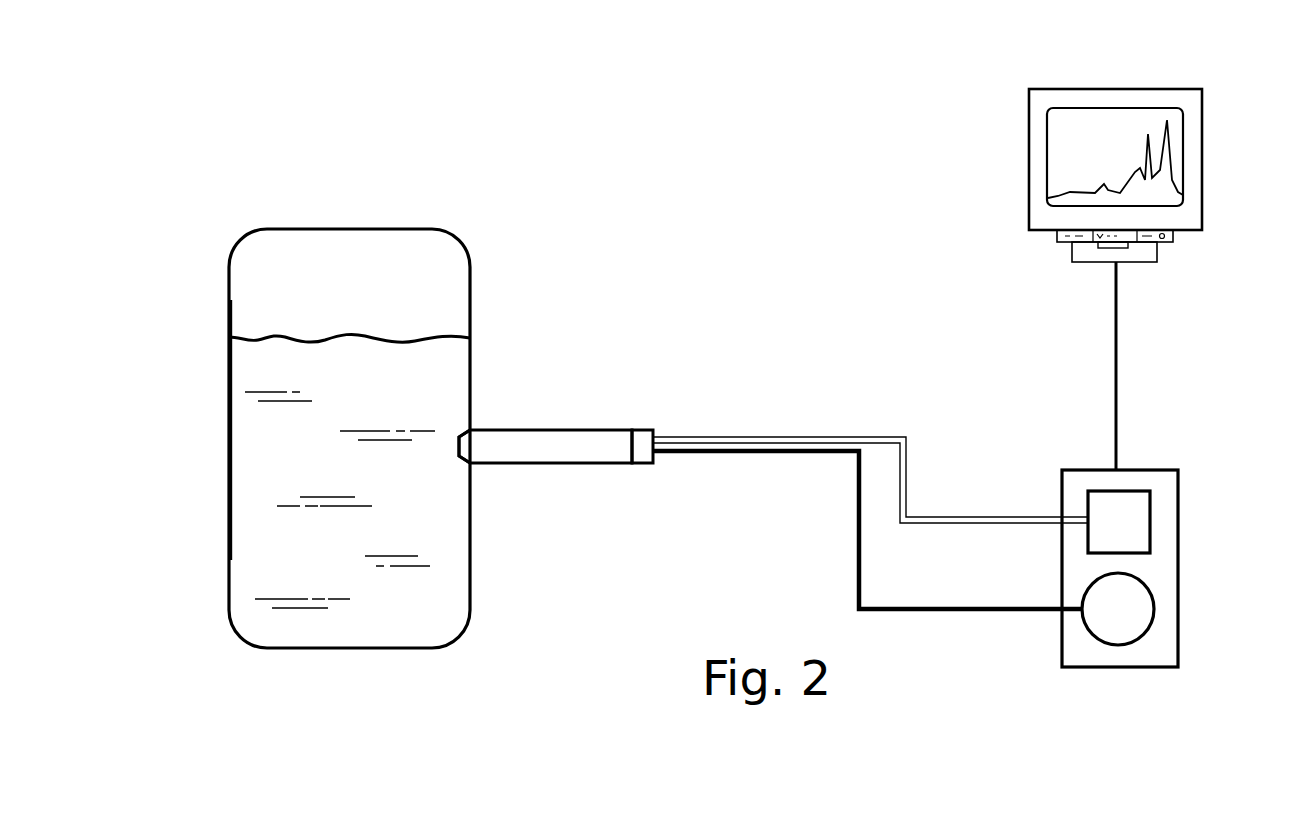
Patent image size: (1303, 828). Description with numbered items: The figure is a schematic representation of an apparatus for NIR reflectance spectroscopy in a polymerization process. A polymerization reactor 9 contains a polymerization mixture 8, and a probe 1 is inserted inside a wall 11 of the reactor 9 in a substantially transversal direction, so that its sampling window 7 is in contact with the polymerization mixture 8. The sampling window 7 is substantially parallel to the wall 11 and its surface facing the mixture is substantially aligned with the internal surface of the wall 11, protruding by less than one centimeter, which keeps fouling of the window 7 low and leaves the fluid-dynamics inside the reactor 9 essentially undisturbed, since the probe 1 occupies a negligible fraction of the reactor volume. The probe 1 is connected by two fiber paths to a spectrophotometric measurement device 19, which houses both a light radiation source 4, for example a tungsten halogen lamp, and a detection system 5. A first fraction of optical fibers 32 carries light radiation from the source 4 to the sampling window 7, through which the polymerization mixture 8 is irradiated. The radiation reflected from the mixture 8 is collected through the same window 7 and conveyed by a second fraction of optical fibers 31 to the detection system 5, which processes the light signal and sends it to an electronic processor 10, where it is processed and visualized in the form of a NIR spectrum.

The probe 1 is at (572, 420).
The light radiation source 4 is at (1127, 536).
The detection system 5 is at (1126, 623).
The sampling window 7 is at (460, 457).
The polymerization mixture 8 is at (378, 397).
The polymerization reactor 9 is at (420, 207).
The electronic processor 10 is at (1110, 78).
The wall 11 is at (229, 443).
The spectrophotometric measurement device 19 is at (1180, 540).
The second fraction of optical fibers 31 is at (990, 612).
The first fraction of optical fibers 32 is at (878, 437).